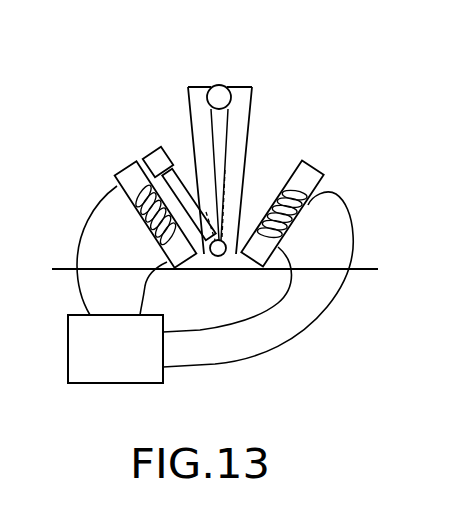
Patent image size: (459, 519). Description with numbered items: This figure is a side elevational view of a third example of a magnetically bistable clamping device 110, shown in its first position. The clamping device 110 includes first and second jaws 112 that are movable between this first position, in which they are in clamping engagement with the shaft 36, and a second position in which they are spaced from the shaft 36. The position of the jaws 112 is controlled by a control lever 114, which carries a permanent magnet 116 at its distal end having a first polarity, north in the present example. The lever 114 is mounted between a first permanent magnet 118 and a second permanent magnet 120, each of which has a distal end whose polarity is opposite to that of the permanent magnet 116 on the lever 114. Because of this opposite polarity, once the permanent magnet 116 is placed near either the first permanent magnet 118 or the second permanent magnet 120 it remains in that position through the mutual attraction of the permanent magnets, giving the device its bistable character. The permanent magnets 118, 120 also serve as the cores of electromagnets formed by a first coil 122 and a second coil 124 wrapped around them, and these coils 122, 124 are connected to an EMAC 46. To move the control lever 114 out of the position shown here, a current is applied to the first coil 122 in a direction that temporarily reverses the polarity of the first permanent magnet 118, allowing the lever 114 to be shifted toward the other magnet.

The shaft 36 is at (215, 86).
The EMAC 46 is at (110, 383).
The magnetically bistable clamping device 110 is at (348, 330).
The first and second jaws 112 is at (196, 108).
The control lever 114 is at (176, 170).
The permanent magnet 116 is at (144, 157).
The first permanent magnet 118 is at (116, 185).
The second permanent magnet 120 is at (336, 195).
The first coil 122 is at (146, 222).
The second coil 124 is at (297, 218).